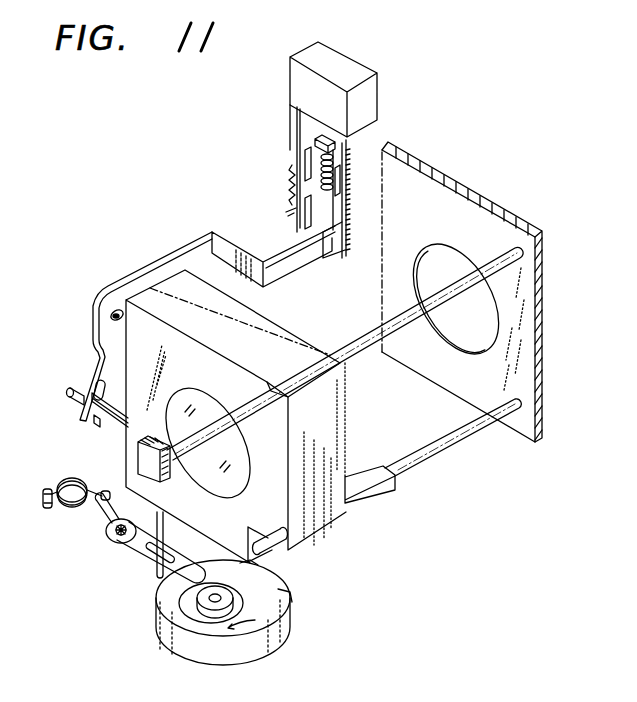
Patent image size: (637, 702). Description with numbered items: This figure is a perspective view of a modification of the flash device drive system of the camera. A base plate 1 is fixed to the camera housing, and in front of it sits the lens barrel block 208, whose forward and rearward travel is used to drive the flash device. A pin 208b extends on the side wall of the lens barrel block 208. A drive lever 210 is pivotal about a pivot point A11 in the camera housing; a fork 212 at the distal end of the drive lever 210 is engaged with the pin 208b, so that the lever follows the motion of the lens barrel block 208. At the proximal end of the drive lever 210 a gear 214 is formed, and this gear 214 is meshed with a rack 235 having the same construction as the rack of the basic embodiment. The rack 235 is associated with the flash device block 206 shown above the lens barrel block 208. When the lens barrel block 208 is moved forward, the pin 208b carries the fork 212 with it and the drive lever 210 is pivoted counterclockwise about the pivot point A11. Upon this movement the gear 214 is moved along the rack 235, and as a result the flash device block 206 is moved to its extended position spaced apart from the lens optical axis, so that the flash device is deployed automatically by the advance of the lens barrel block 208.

The base plate 1 is at (442, 192).
The flash device block 206 is at (297, 80).
The lens barrel block 208 is at (262, 321).
The pin 208b is at (118, 414).
The drive lever 210 is at (95, 297).
The fork 212 is at (76, 416).
The gear 214 is at (330, 237).
The rack 235 is at (347, 143).
The pivot point A11 is at (112, 316).